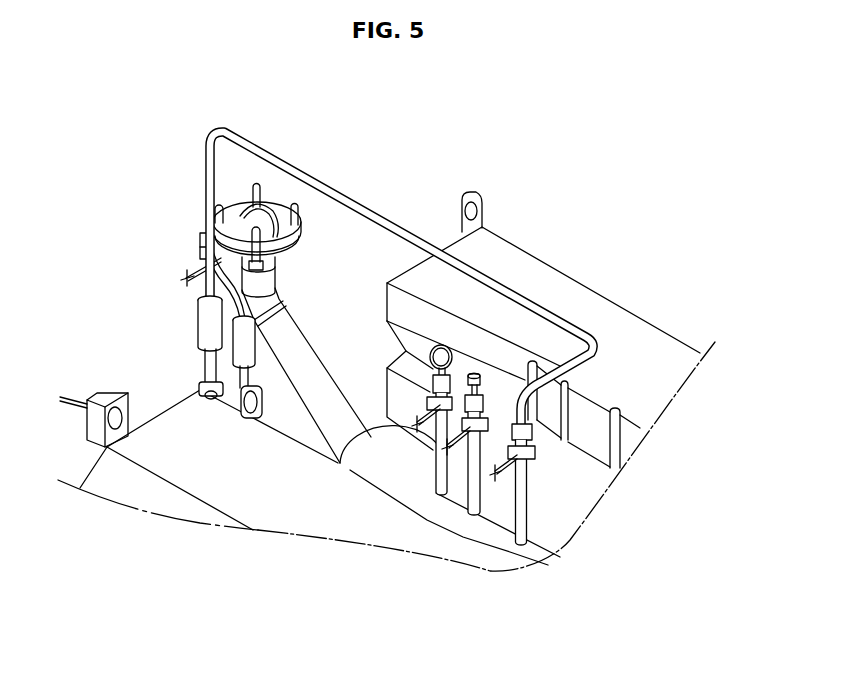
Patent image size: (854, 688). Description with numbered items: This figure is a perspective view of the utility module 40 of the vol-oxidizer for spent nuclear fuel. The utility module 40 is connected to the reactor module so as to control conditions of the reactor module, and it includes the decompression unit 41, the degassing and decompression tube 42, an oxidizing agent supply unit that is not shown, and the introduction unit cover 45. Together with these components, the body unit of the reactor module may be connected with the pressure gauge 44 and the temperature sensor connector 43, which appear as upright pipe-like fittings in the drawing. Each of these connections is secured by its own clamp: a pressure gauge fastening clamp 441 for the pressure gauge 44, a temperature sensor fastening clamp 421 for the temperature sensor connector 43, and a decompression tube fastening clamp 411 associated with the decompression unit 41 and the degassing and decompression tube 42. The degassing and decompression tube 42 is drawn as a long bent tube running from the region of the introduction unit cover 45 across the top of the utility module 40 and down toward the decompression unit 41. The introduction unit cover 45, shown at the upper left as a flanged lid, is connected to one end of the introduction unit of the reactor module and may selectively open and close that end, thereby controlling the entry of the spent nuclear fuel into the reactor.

The utility module 40 is at (510, 274).
The decompression unit 41 is at (581, 527).
The decompression tube fastening clamp 411 is at (536, 468).
The degassing and decompression tube 42 is at (552, 310).
The temperature sensor fastening clamp 421 is at (470, 432).
The temperature sensor connector 43 is at (433, 503).
The pressure gauge 44 is at (435, 465).
The pressure gauge fastening clamp 441 is at (353, 444).
The introduction unit cover 45 is at (277, 207).